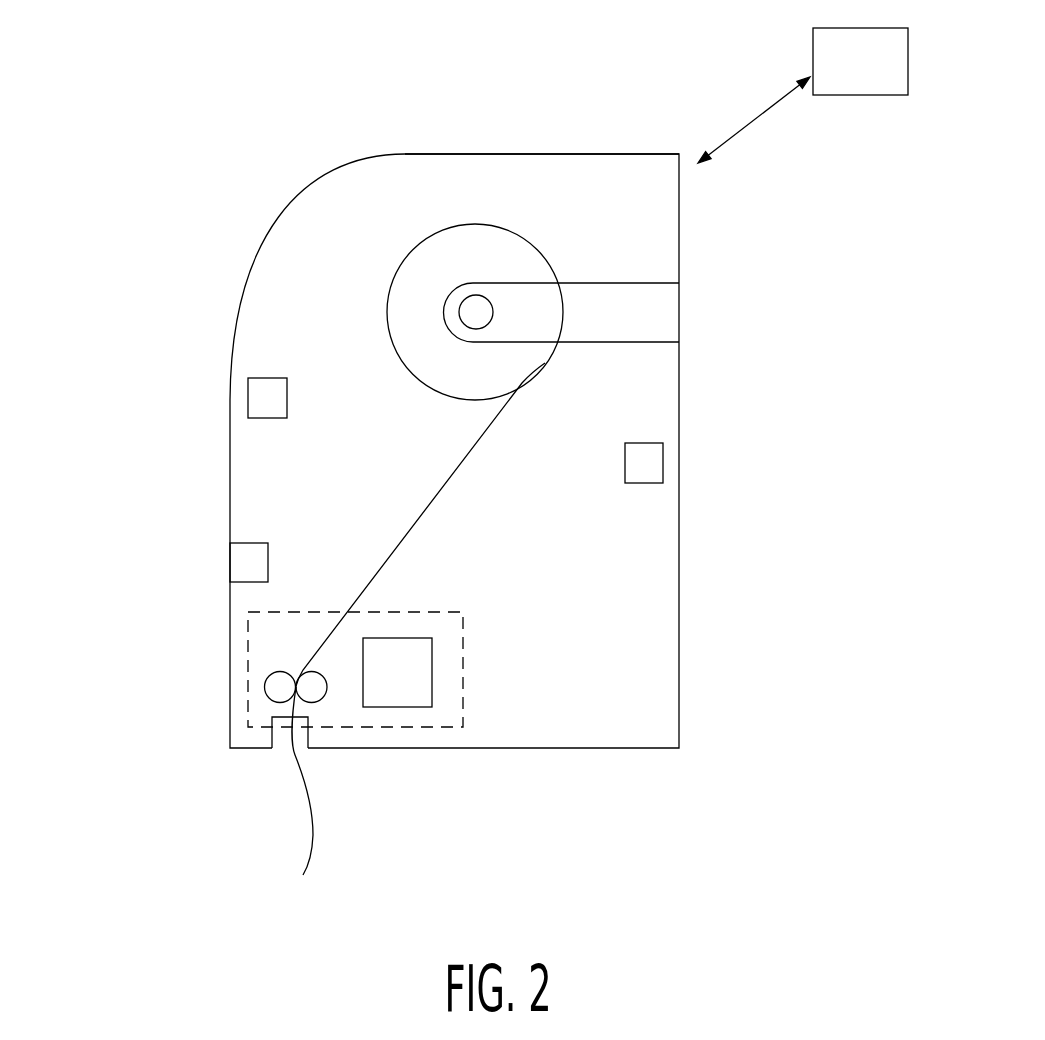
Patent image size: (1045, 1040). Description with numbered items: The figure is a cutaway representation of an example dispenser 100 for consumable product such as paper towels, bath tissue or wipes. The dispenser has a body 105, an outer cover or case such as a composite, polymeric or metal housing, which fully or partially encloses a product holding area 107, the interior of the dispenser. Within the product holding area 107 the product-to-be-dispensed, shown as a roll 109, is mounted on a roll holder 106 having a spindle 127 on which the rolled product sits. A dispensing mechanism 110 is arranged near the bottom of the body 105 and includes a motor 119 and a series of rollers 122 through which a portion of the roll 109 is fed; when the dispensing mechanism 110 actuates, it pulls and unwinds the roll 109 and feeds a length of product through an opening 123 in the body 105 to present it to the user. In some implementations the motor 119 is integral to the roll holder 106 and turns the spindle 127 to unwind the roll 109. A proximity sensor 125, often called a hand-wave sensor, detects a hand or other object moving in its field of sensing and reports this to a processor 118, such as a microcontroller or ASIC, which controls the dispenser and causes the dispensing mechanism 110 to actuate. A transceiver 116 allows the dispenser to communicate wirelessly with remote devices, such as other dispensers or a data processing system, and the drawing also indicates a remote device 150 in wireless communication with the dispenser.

The dispenser 100 is at (170, 216).
The body 105 is at (318, 170).
The roll holder 106 is at (655, 312).
The product holding area 107 is at (438, 172).
The roll 109 is at (436, 375).
The dispensing mechanism 110 is at (463, 653).
The transceiver 116 is at (648, 468).
The processor 118 is at (263, 403).
The motor 119 is at (378, 687).
The rollers 122 is at (282, 687).
The opening 123 is at (278, 760).
The proximity sensor 125 is at (249, 563).
The spindle 127 is at (477, 309).
The remote device 150 is at (881, 75).